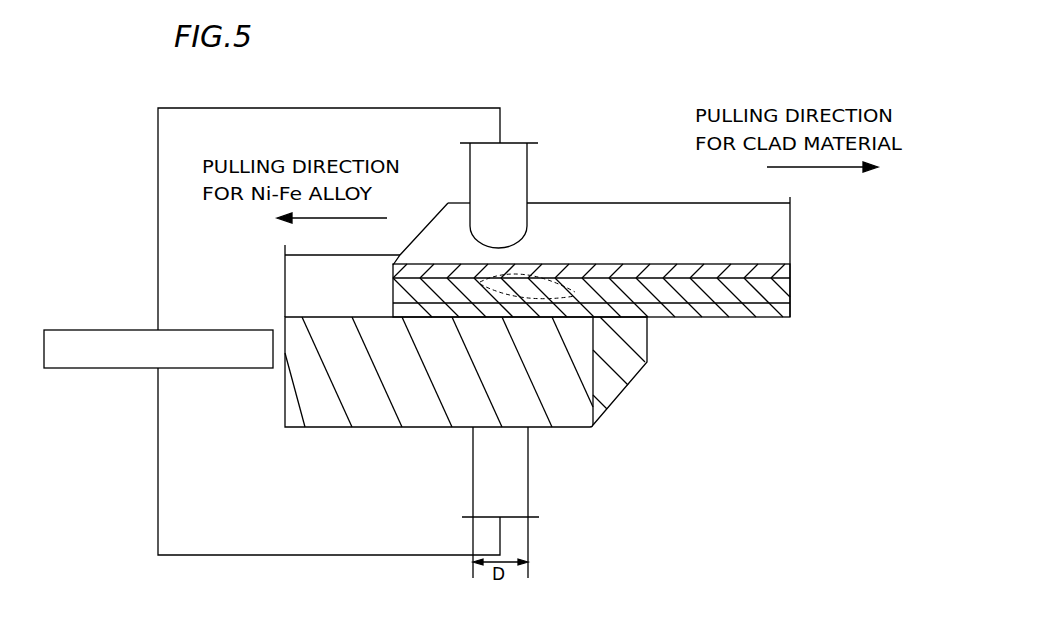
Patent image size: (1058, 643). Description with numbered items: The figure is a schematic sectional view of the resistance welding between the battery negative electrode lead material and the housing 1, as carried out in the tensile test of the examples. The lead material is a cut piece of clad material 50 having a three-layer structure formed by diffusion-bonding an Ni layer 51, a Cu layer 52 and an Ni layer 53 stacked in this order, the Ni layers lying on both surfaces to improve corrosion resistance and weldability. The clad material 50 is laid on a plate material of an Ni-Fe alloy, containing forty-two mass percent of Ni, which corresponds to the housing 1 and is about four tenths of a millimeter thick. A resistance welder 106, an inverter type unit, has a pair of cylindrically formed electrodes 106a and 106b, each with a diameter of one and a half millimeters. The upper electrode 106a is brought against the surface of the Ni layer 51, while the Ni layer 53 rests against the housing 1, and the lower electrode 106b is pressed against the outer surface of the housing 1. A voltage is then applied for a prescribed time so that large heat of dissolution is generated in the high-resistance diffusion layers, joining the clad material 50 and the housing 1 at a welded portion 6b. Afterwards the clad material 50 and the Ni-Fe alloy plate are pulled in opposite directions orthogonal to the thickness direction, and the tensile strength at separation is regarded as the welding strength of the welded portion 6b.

The housing 1 is at (285, 402).
The welded portion 6b is at (628, 337).
The clad material 50 is at (862, 255).
The Ni layer 51 is at (793, 268).
The Cu layer 52 is at (793, 289).
The Ni layer 53 is at (782, 308).
The resistance welder 106 is at (196, 330).
The electrode 106a is at (517, 170).
The electrode 106b is at (520, 480).